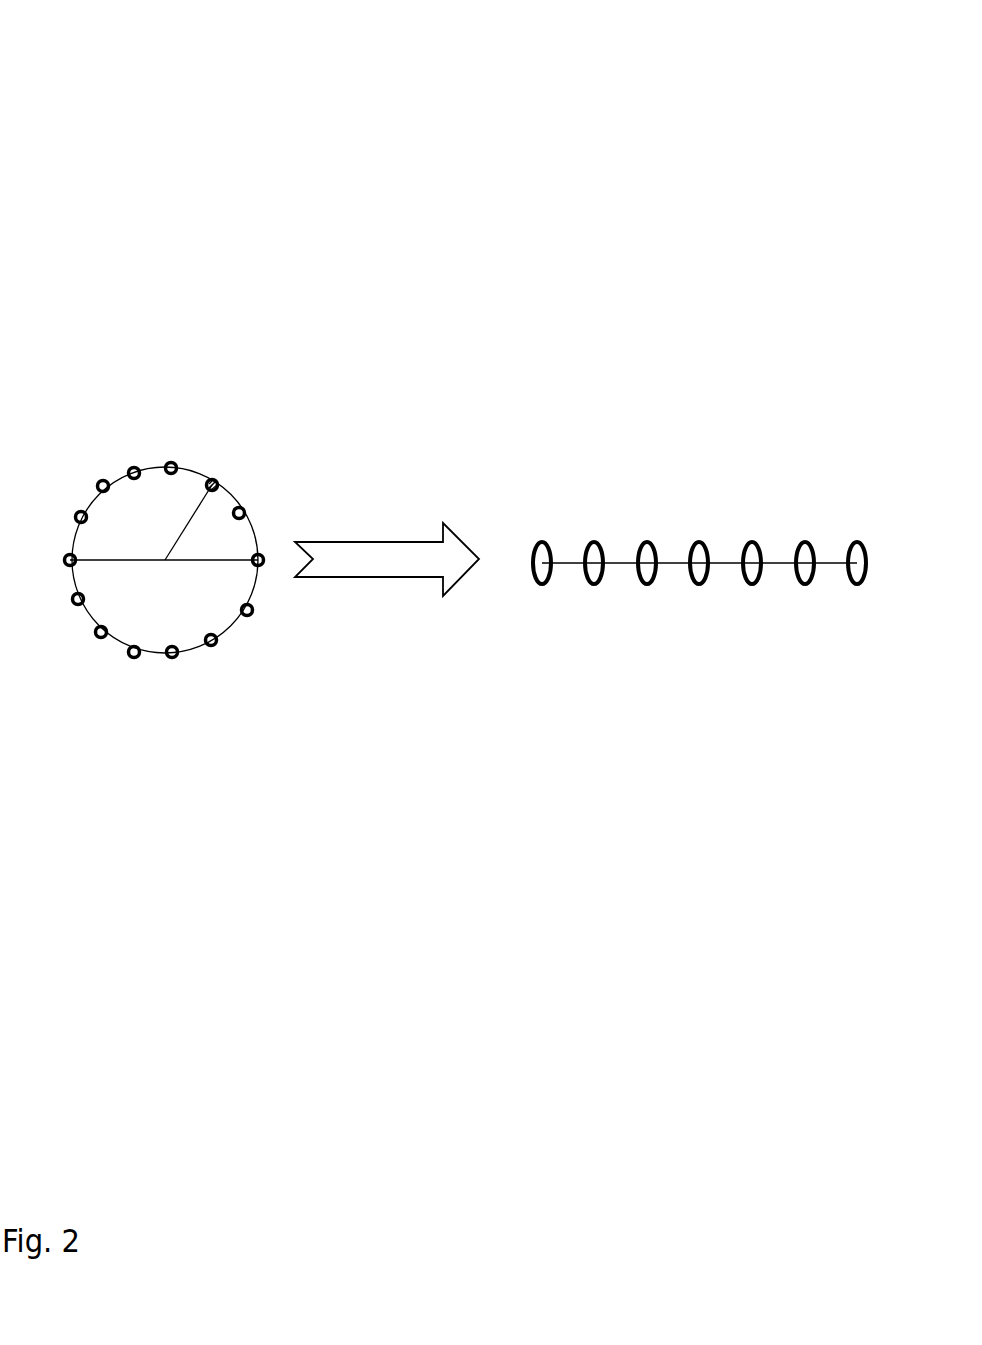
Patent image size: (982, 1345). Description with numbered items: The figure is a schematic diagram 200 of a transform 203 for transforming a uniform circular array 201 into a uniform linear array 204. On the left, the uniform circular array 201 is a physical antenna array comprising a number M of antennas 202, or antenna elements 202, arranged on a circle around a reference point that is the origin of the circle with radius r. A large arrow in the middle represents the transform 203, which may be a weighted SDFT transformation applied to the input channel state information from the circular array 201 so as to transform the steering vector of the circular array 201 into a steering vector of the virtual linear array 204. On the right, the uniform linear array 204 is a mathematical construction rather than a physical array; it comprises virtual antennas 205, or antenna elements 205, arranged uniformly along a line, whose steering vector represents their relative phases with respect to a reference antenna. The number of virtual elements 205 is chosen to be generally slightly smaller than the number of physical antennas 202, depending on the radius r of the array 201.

The schematic diagram 200 is at (126, 79).
The uniform circular array 201 is at (233, 402).
The antenna element 202 is at (127, 667).
The transform 203 is at (383, 594).
The uniform linear array 204 is at (678, 402).
The virtual antenna element 205 is at (690, 595).